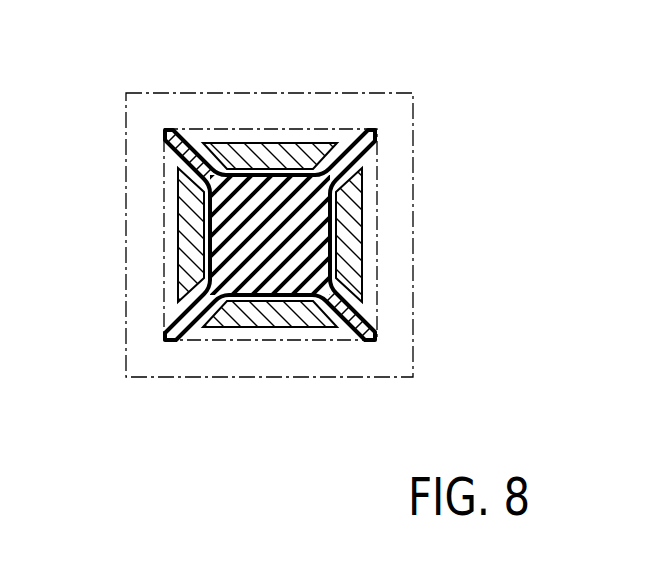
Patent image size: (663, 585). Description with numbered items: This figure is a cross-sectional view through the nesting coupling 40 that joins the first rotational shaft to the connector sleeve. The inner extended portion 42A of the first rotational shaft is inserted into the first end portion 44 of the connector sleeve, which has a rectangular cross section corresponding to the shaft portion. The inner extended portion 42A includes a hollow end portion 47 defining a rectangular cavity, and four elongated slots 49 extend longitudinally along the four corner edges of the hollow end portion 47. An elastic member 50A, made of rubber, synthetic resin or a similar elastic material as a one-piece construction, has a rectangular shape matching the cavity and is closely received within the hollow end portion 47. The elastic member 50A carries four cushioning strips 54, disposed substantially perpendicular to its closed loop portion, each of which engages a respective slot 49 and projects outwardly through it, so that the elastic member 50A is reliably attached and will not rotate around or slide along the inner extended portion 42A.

The nesting coupling 40 is at (198, 62).
The first end portion 44 is at (289, 101).
The hollow end portion 47 is at (264, 296).
The elastic member 50A is at (300, 247).
The cushioning strip 54 is at (163, 134).
The elongated slot 49 is at (178, 177).
The inner extended portion 42A is at (178, 228).